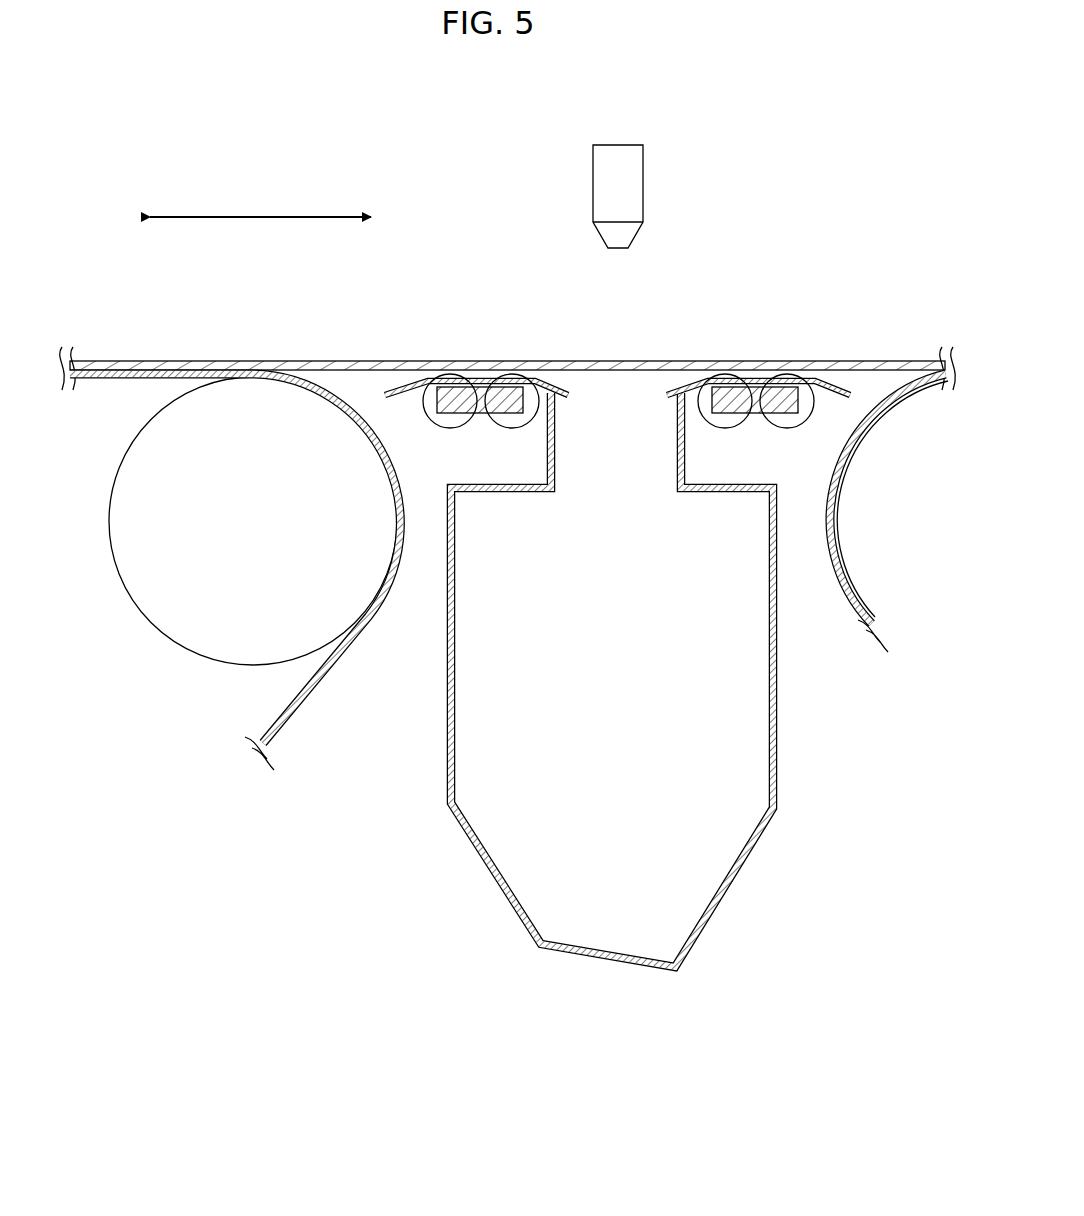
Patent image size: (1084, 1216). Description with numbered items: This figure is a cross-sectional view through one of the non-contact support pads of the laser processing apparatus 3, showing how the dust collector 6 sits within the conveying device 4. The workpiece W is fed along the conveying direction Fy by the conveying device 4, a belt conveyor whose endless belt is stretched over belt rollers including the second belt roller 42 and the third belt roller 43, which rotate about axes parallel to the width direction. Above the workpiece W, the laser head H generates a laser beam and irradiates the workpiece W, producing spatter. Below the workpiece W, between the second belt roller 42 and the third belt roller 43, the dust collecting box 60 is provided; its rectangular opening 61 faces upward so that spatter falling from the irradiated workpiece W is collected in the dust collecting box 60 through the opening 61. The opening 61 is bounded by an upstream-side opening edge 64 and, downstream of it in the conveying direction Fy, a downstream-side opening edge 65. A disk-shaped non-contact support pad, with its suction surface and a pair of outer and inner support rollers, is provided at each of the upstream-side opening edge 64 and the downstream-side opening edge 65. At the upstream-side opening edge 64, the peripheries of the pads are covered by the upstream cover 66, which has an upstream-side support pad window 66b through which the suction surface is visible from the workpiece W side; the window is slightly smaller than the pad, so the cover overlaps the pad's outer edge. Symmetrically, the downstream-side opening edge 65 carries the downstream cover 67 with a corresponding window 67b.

The laser processing apparatus 3 is at (858, 188).
The conveying device 4 is at (495, 631).
The dust collector 6 is at (623, 643).
The second belt roller 42 is at (110, 520).
The third belt roller 43 is at (860, 565).
The dust collecting box 60 is at (446, 778).
The opening 61 is at (622, 386).
The upstream-side opening edge 64 is at (487, 369).
The downstream-side opening edge 65 is at (771, 369).
The upstream cover 66 is at (420, 382).
The upstream-side support pad window 66b is at (508, 382).
The downstream cover 67 is at (836, 378).
The flat portion 67b is at (735, 382).
The laser head H is at (625, 150).
The workpiece W is at (148, 360).
The conveying direction Fy is at (306, 216).